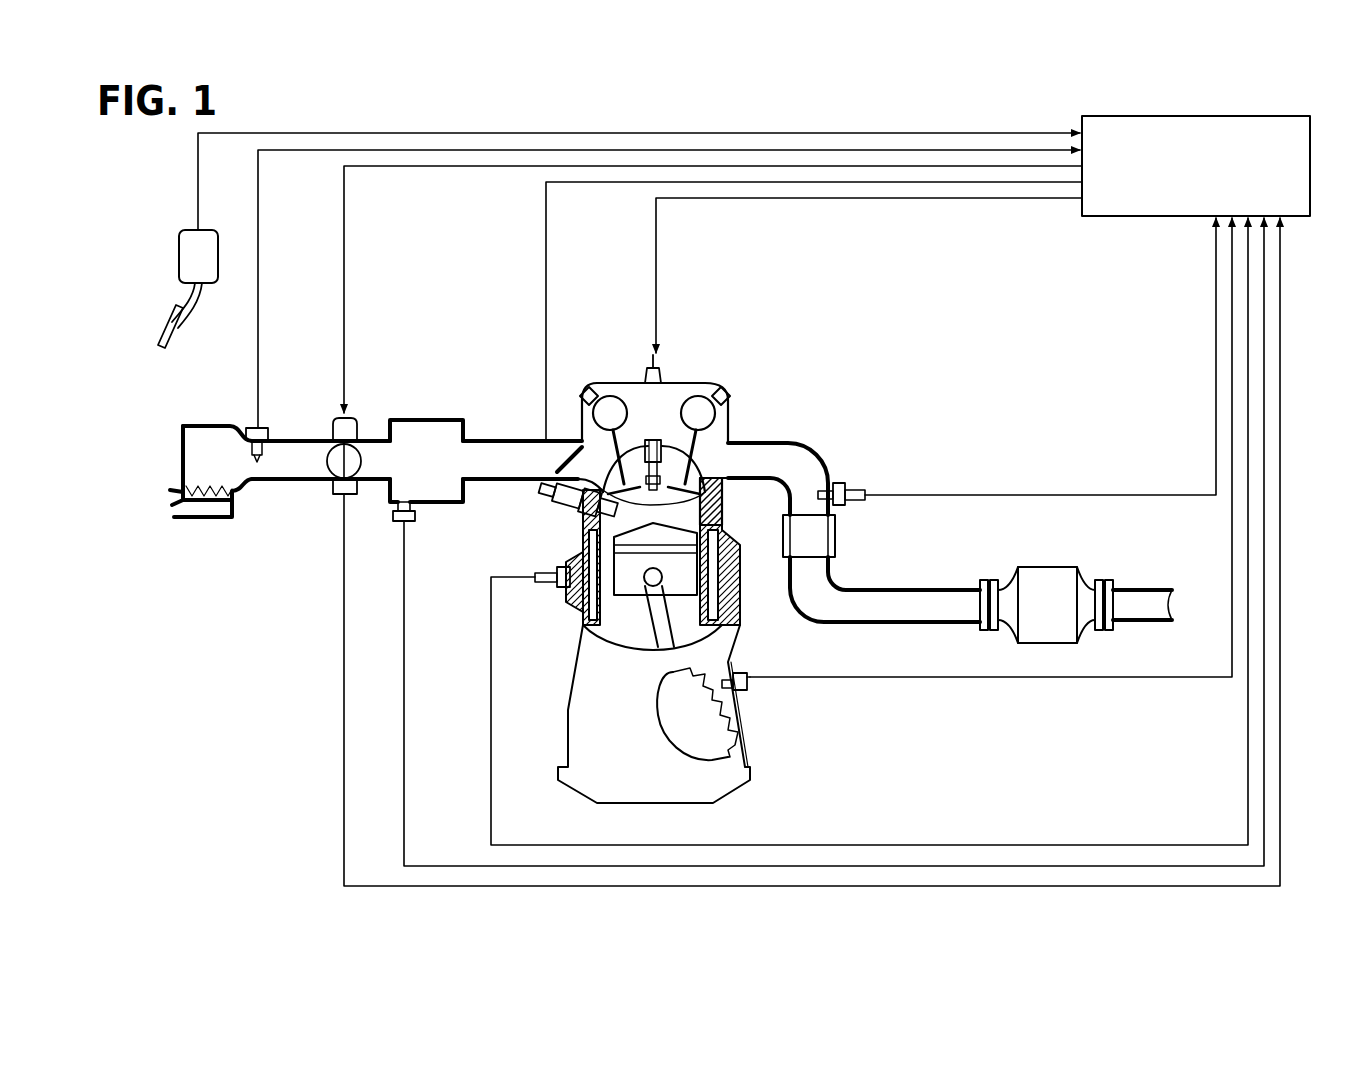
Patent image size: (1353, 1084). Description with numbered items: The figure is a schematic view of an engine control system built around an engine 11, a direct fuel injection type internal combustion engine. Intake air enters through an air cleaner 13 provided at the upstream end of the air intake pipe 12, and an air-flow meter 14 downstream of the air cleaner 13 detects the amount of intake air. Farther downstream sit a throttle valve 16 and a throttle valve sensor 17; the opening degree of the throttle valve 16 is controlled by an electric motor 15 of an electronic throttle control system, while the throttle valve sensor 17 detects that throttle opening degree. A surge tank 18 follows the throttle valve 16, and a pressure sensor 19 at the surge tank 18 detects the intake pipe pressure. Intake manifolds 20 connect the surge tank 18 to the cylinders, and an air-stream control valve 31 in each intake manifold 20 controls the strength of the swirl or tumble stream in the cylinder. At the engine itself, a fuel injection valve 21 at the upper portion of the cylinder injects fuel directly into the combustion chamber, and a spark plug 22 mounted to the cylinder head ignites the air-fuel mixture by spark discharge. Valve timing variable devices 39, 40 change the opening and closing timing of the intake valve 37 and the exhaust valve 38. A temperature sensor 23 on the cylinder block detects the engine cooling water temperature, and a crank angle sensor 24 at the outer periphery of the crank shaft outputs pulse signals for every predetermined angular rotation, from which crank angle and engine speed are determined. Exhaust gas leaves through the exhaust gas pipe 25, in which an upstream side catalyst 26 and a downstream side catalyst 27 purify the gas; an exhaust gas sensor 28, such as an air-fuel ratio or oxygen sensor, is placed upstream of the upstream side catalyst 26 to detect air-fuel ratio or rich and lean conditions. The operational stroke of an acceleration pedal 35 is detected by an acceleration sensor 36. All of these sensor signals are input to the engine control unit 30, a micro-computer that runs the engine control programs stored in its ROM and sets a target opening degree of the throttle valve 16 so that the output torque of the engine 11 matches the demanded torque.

The engine 11 is at (705, 385).
The air intake pipe 12 is at (282, 438).
The air cleaner 13 is at (212, 502).
The air-flow meter 14 is at (247, 428).
The electric motor 15 is at (336, 380).
The throttle valve 16 is at (350, 458).
The throttle valve sensor 17 is at (332, 498).
The surge tank 18 is at (446, 505).
The pressure sensor 19 is at (410, 523).
The intake manifold 20 is at (487, 438).
The fuel injection valve 21 is at (545, 500).
The spark plug 22 is at (660, 468).
The temperature sensor 23 is at (556, 590).
The crank angle sensor 24 is at (755, 690).
The exhaust gas pipe 25 is at (802, 445).
The upstream side catalyst 26 is at (836, 537).
The downstream side catalyst 27 is at (1052, 567).
The exhaust gas sensor 28 is at (840, 482).
The engine control unit 30 is at (1140, 218).
The air-stream control valve 31 is at (570, 458).
The acceleration pedal 35 is at (170, 322).
The acceleration sensor 36 is at (205, 226).
The intake valve 37 is at (586, 530).
The exhaust valve 38 is at (732, 500).
The valve timing variable device 39 is at (614, 410).
The valve timing variable device 40 is at (705, 416).